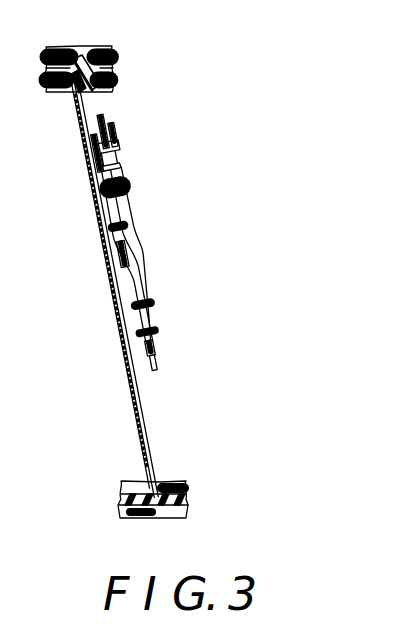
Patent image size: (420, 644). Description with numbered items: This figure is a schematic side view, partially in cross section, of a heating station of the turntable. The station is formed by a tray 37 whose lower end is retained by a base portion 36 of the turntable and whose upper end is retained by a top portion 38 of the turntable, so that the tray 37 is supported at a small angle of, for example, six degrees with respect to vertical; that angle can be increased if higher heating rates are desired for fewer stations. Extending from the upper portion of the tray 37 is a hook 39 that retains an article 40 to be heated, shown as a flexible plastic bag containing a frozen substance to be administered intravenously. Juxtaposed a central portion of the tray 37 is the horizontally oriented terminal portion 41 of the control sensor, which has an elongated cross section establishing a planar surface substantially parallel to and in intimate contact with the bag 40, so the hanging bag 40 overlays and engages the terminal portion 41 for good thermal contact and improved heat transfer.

The base portion 36 is at (188, 498).
The tray 37 is at (150, 450).
The top portion 38 is at (113, 60).
The hook 39 is at (118, 146).
The article 40 is at (141, 252).
The terminal portion 41 is at (103, 253).